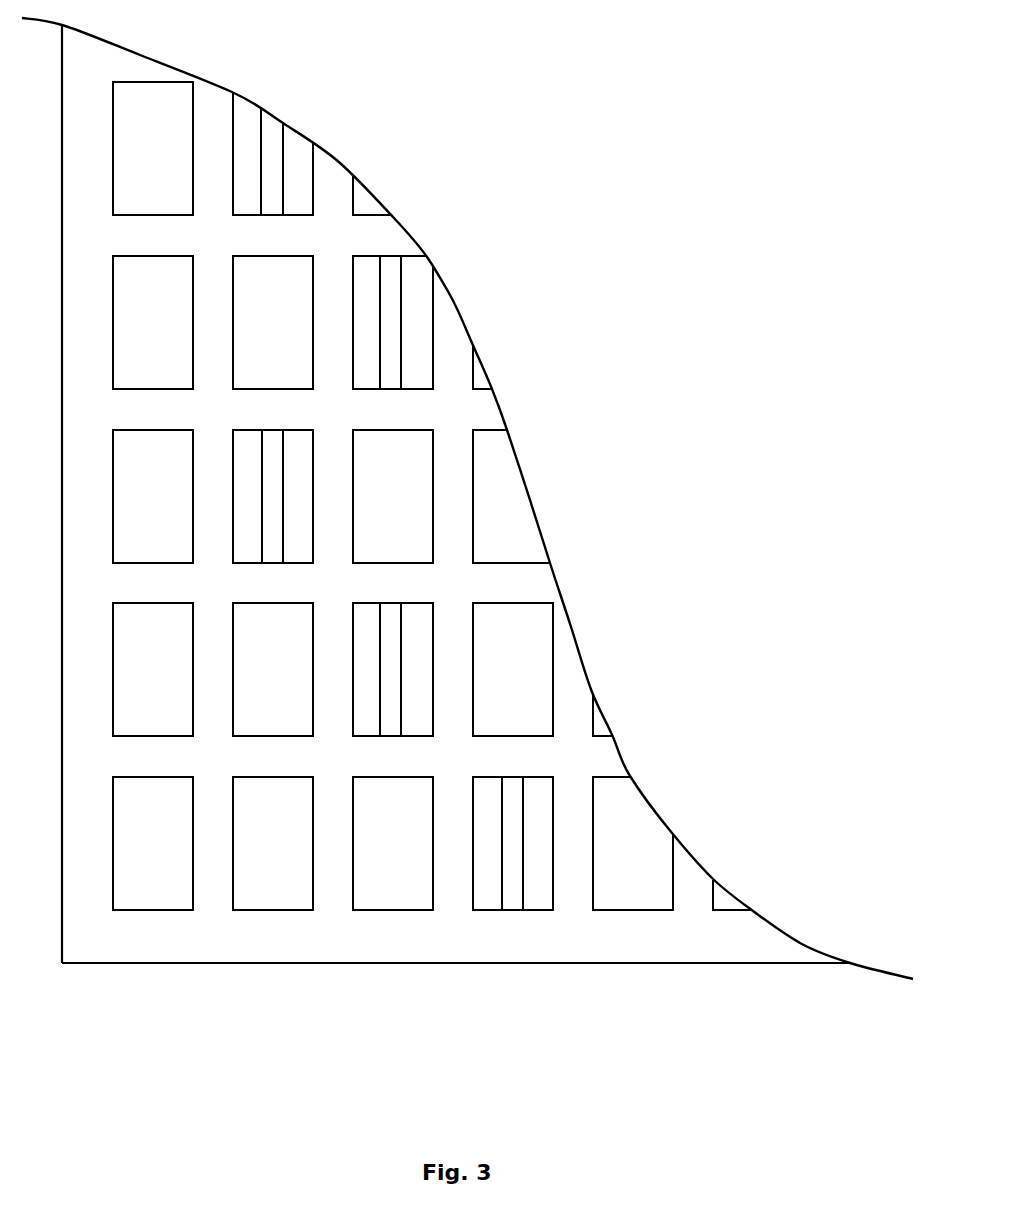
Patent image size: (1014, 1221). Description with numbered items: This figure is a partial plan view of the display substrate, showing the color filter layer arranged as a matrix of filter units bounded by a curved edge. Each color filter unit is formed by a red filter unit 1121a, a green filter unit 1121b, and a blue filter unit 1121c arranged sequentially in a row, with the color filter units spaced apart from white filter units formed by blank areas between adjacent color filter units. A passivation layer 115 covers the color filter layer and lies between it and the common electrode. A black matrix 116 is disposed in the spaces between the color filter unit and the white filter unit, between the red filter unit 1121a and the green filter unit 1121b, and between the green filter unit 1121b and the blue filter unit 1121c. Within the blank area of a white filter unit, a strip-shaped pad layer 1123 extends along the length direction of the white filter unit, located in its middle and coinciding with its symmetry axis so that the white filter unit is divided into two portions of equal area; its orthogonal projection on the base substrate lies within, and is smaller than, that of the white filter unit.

The passivation layer 115 is at (433, 295).
The black matrix 116 is at (512, 579).
The red filter unit 1121a is at (139, 882).
The green filter unit 1121b is at (257, 882).
The blue filter unit 1121c is at (379, 882).
The pad layer 1123 is at (513, 882).